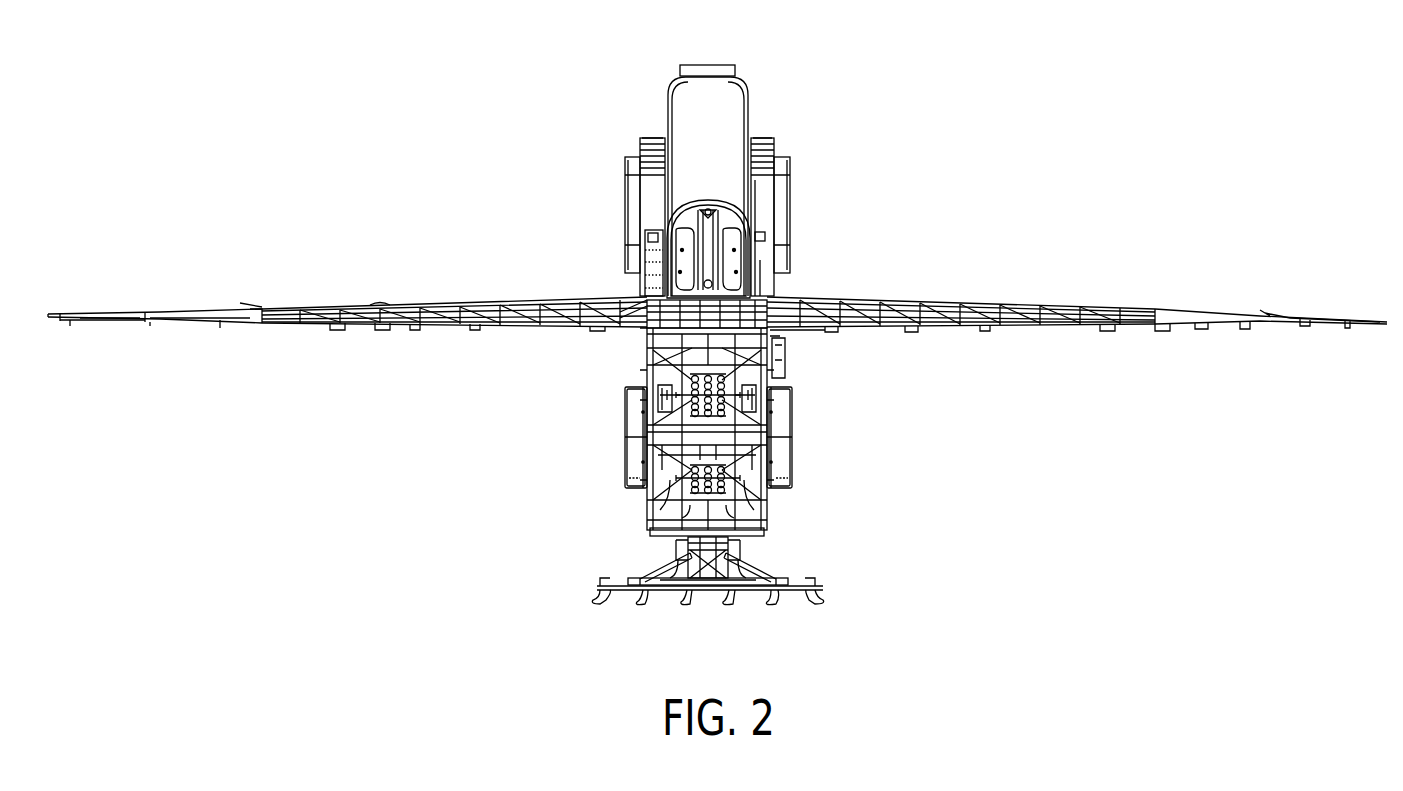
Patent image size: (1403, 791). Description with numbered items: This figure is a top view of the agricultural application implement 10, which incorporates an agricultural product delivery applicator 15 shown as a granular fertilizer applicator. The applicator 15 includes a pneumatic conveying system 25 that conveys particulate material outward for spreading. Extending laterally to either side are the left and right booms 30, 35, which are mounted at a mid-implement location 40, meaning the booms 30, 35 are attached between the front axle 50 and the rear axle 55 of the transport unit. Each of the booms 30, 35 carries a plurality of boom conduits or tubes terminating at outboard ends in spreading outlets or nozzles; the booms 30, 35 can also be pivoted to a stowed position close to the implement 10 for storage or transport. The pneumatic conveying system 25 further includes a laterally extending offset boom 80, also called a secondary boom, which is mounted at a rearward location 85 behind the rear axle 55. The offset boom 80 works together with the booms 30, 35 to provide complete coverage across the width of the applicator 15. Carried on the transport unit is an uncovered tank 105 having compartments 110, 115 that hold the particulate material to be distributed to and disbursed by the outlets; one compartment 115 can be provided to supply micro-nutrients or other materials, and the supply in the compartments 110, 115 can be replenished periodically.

The agricultural application implement 10 is at (965, 460).
The agricultural product delivery applicator 15 is at (795, 373).
The pneumatic conveying system 25 is at (752, 549).
The left laterally extending boom 30 is at (975, 303).
The right laterally extending boom 35 is at (226, 313).
The mid-implement location 40 is at (610, 280).
The front axle 50 is at (790, 218).
The rear axle 55 is at (792, 437).
The offset boom 80 is at (645, 580).
The rearward location 85 is at (652, 553).
The uncovered tank 105 is at (656, 440).
The compartment 110 is at (667, 381).
The compartment 115 is at (666, 478).